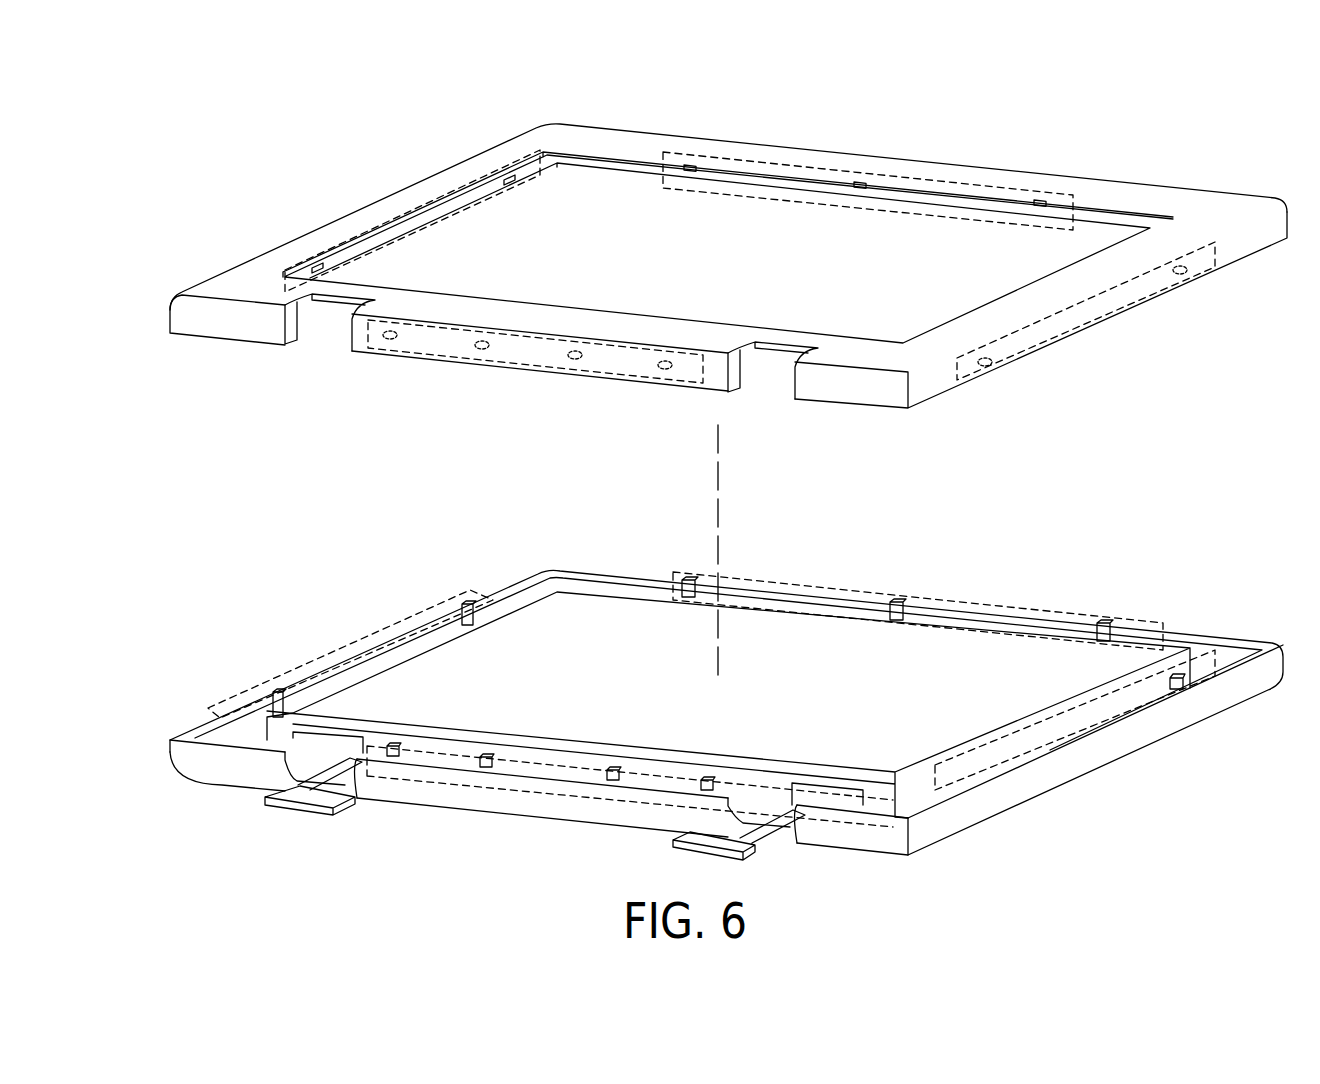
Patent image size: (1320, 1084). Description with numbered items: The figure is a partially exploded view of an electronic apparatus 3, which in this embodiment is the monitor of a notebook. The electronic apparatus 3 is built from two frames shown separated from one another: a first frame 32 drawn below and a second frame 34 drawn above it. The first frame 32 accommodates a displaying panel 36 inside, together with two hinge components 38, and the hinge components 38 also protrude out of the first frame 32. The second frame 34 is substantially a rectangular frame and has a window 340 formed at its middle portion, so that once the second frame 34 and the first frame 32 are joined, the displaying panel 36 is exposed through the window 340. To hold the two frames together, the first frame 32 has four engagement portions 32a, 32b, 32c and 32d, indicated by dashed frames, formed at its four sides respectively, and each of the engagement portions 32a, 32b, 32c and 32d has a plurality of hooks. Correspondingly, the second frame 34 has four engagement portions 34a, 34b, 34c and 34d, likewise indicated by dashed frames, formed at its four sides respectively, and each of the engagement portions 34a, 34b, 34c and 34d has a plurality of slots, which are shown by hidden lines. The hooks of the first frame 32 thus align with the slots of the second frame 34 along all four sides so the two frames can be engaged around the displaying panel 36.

The electronic apparatus 3 is at (186, 145).
The first frame 32 is at (1232, 695).
The engagement portion 32a is at (1012, 597).
The engagement portion 32b is at (1118, 744).
The engagement portion 32c is at (391, 618).
The engagement portion 32d is at (536, 792).
The second frame 34 is at (1215, 200).
The engagement portion 34a is at (911, 164).
The engagement portion 34b is at (1136, 310).
The engagement portion 34c is at (441, 189).
The engagement portion 34d is at (551, 382).
The window 340 is at (597, 200).
The displaying panel 36 is at (618, 602).
The hinge component 38 is at (302, 800).